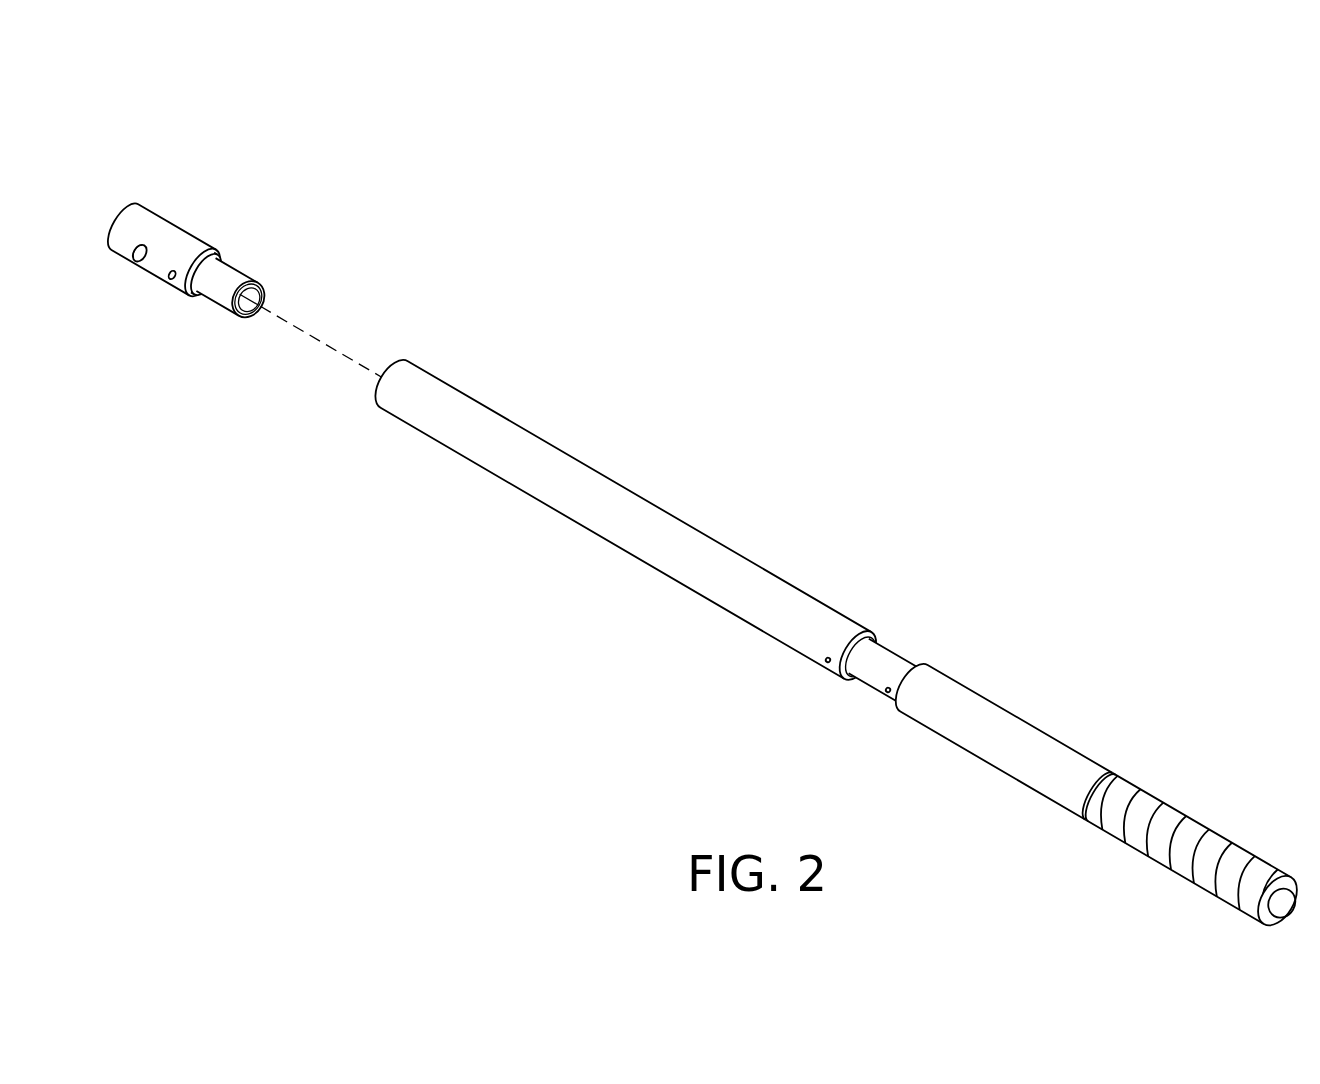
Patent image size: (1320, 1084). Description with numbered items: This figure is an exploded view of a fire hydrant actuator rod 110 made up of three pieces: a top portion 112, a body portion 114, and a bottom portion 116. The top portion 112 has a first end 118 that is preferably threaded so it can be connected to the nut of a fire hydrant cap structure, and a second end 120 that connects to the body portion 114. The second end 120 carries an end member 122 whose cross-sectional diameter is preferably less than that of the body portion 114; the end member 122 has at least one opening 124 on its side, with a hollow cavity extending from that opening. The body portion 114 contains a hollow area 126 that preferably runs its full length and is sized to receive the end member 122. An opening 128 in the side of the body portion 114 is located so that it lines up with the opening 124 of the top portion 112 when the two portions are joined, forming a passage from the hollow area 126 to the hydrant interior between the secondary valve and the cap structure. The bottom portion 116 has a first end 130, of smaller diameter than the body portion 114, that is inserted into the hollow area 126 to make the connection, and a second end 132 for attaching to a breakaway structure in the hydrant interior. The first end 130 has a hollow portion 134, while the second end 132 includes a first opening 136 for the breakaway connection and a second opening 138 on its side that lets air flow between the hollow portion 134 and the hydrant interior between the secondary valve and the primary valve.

The fire hydrant actuator rod 110 is at (704, 214).
The top portion 112 is at (1095, 794).
The body portion 114 is at (500, 427).
The bottom portion 116 is at (191, 228).
The first end 118 is at (1196, 850).
The second end 120 is at (968, 698).
The end member 122 is at (880, 655).
The opening 124 is at (888, 697).
The hollow area 126 is at (850, 682).
The opening 128 is at (823, 666).
The first end 130 is at (218, 292).
The second end 132 is at (140, 214).
The hollow portion 134 is at (262, 288).
The first opening 136 is at (140, 261).
The second opening 138 is at (173, 282).